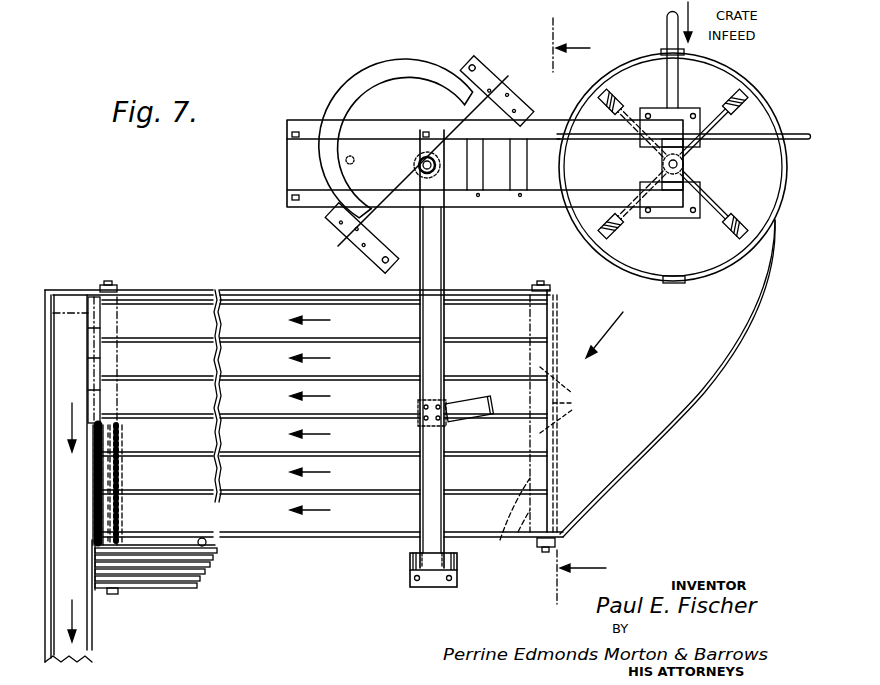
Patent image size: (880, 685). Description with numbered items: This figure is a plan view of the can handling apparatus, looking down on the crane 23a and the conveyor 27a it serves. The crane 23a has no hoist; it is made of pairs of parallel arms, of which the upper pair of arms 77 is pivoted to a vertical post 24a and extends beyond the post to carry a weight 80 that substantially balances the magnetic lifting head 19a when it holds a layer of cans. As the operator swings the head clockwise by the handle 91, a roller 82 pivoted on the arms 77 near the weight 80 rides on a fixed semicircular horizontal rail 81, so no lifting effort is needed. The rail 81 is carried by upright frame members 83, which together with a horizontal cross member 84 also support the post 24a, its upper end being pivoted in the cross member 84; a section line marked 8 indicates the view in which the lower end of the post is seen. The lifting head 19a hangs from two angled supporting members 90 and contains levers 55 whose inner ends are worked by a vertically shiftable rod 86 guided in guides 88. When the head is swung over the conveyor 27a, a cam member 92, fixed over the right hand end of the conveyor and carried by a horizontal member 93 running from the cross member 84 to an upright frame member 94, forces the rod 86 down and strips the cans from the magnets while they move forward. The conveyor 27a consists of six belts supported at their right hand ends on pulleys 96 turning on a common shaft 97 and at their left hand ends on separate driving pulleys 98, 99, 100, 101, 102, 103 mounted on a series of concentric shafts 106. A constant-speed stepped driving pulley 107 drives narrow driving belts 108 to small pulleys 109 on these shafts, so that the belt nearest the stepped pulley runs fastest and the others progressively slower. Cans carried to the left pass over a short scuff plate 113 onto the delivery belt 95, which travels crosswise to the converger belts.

The section line 8- 8 is at (579, 311).
The lifting head 19a is at (771, 119).
The crane 23a is at (556, 116).
The vertical post 24a is at (447, 185).
The conveyor 27a is at (657, 378).
The levers 55 is at (722, 127).
The upper pair of arms 77 is at (553, 196).
The weight 80 is at (292, 166).
The semicircular horizontal rail 81 is at (406, 82).
The roller 82 is at (355, 158).
The upright frame members 83 is at (336, 250).
The horizontal cross member 84 is at (452, 111).
The vertically shiftable rod 86 is at (686, 164).
The guides 88 is at (683, 178).
The angled supporting members 90 is at (681, 108).
The handle 91 is at (800, 142).
The cam member 92 is at (478, 416).
The horizontal member 93 is at (420, 318).
The upright frame member 94 is at (428, 588).
The delivery belt 95 is at (88, 641).
The pulleys 96 is at (501, 541).
The common shaft 97 is at (543, 553).
The driving pulley 98 is at (124, 515).
The driving pulley 99 is at (124, 480).
The driving pulley 100 is at (119, 450).
The driving pulley 101 is at (90, 390).
The driving pulley 102 is at (90, 358).
The driving pulley 103 is at (90, 328).
The concentric shafts 106 is at (114, 284).
The stepped driving pulley 107 is at (218, 556).
The narrow driving belts 108 is at (165, 590).
The small pulleys 109 is at (95, 566).
The scuff plate 113 is at (102, 313).